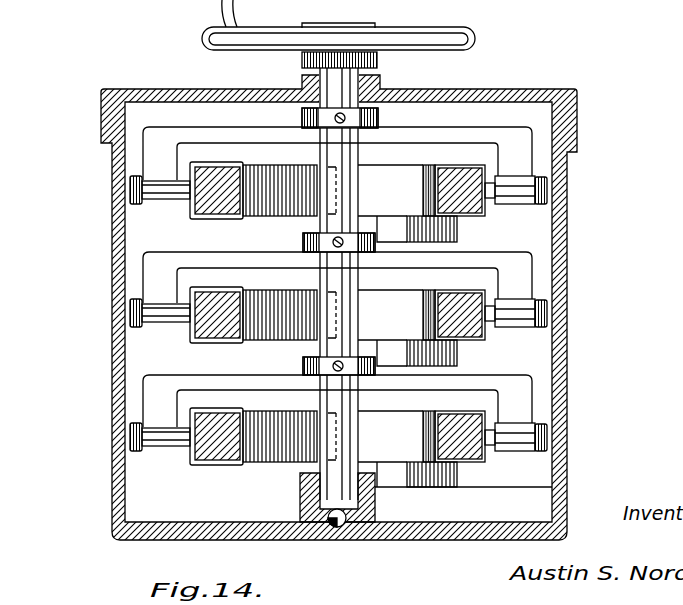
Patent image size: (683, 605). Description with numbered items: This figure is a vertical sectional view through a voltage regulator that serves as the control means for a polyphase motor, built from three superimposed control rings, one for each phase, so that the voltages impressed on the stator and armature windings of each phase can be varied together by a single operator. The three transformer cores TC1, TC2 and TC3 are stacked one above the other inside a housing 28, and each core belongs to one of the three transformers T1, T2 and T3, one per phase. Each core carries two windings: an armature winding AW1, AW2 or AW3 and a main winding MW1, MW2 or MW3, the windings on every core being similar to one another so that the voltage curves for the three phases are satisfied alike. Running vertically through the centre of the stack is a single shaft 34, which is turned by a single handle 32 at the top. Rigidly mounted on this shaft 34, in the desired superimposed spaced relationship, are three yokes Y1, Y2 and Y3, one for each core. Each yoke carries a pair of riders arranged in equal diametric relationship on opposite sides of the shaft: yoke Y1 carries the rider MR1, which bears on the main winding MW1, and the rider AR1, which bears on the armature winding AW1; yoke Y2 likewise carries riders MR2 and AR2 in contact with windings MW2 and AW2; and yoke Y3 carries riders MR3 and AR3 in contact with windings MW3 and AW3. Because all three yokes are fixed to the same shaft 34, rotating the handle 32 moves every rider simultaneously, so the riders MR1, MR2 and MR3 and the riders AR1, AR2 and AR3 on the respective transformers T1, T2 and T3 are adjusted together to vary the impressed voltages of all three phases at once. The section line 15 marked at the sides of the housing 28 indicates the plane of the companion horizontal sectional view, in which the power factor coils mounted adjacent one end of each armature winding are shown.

The housing 28 is at (558, 488).
The handle 32 is at (410, 37).
The shaft 34 is at (357, 158).
The section line 15- 15 is at (170, 231).
The yoke Y1 is at (405, 137).
The rider AR1 is at (153, 186).
The armature winding AW1 is at (223, 216).
The transformer core TC1 is at (245, 167).
The main winding MW1 is at (435, 170).
The rider MR1 is at (512, 207).
The transformer T1 is at (487, 172).
The yoke Y2 is at (457, 263).
The rider AR2 is at (158, 308).
The armature winding AW2 is at (210, 341).
The transformer core TC2 is at (224, 289).
The main winding MW2 is at (477, 352).
The rider MR2 is at (530, 303).
The transformer T2 is at (483, 337).
The yoke Y3 is at (437, 387).
The rider AR3 is at (158, 430).
The armature winding AW3 is at (208, 463).
The transformer core TC3 is at (223, 423).
The main winding MW3 is at (475, 465).
The rider MR3 is at (518, 427).
The transformer T3 is at (483, 458).